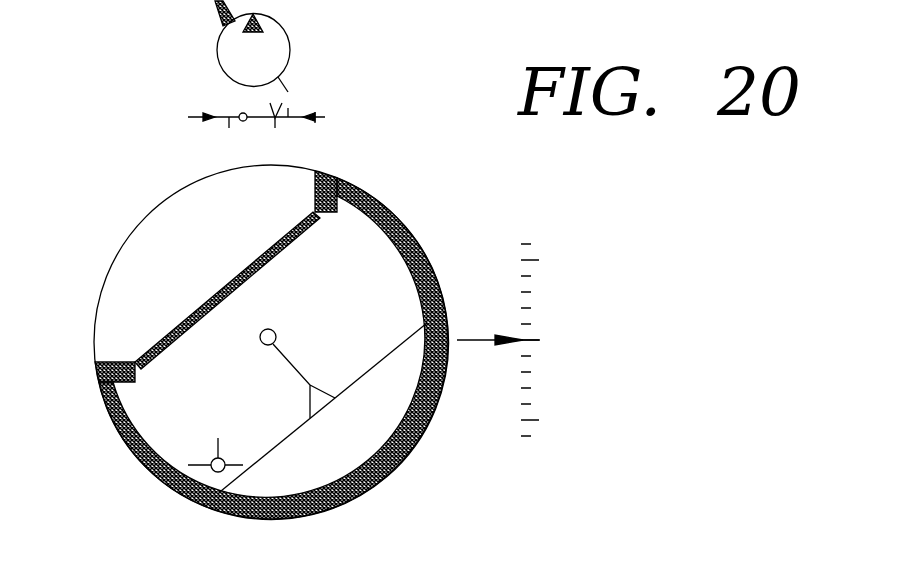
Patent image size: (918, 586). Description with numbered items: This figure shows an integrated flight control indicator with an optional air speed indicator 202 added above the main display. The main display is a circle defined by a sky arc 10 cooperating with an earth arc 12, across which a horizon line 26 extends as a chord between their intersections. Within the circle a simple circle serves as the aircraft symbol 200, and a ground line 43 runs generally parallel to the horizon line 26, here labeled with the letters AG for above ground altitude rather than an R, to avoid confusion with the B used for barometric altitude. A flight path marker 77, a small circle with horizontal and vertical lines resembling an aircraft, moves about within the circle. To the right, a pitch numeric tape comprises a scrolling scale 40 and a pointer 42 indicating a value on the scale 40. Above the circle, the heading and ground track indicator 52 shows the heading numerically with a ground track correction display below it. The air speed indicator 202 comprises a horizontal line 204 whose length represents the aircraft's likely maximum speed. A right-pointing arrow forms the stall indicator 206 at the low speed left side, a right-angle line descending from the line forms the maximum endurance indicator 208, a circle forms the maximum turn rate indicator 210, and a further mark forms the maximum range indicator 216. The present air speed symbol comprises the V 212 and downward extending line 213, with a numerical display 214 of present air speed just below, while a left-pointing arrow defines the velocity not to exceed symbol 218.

The sky arc 10 is at (140, 222).
The earth arc 12 is at (394, 470).
The horizon line 26 is at (213, 297).
The scale 40 is at (568, 228).
The pointer 42 is at (477, 340).
The ground line 43 is at (281, 447).
The heading and ground track indicator 52 is at (303, 38).
The flight path marker 77 is at (208, 455).
The aircraft symbol 200 is at (264, 344).
The air speed indicator 202 is at (200, 90).
The horizontal line 204 is at (188, 117).
The stall indicator 206 is at (205, 115).
The maximum endurance indicator 208 is at (227, 124).
The maximum turn rate indicator 210 is at (240, 114).
The V 212 is at (282, 103).
The downward extending line 213 is at (270, 126).
The numerical display 214 is at (291, 138).
The maximum range indicator 216 is at (290, 108).
The velocity not to exceed symbol 218 is at (325, 117).